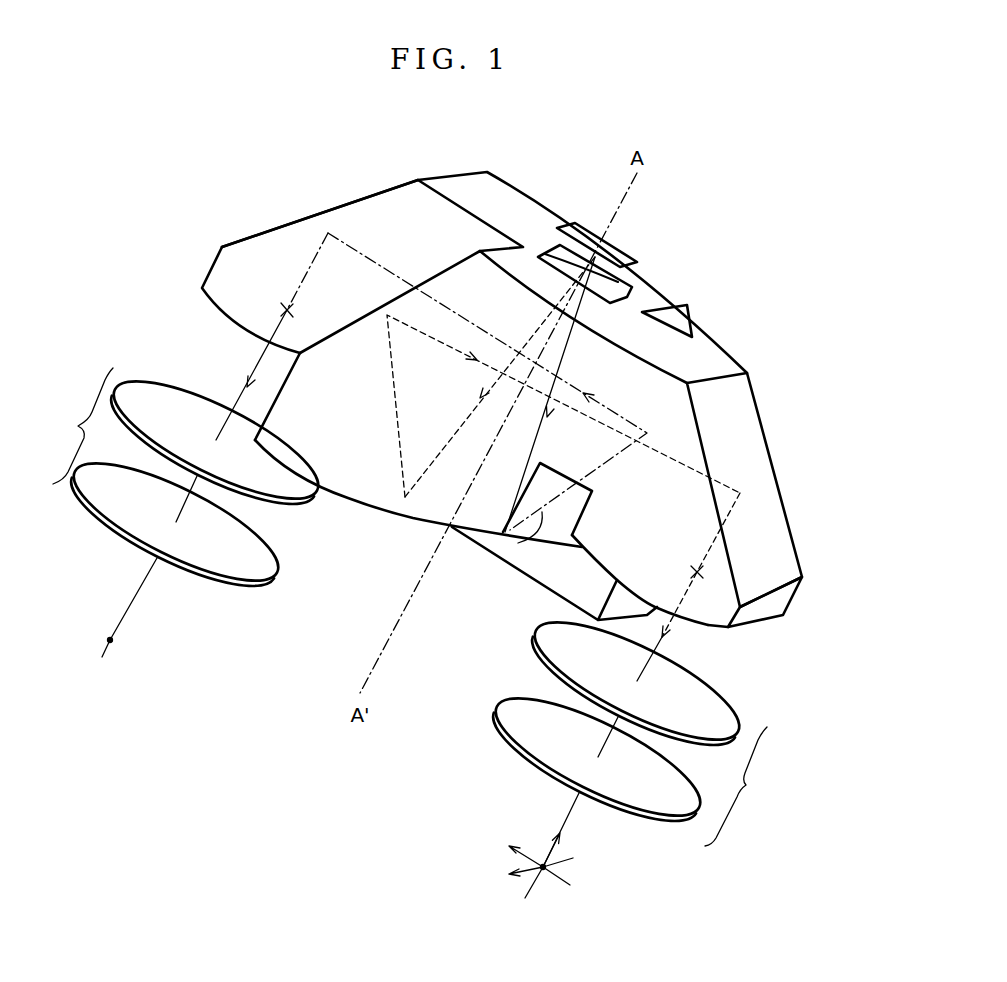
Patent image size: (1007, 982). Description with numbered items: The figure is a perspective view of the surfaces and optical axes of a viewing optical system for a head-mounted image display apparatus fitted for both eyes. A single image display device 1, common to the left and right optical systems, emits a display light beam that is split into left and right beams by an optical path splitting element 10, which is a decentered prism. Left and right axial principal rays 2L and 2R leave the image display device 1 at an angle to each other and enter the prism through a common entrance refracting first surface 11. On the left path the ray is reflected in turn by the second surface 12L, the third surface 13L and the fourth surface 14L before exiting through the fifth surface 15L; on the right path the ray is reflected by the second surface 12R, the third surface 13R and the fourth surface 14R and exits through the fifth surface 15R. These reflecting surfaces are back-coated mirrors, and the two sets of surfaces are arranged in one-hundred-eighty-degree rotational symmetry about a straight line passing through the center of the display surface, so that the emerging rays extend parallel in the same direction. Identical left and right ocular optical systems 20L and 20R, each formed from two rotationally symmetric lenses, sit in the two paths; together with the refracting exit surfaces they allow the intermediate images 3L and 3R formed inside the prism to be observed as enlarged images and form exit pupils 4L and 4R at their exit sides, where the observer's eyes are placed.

The image display device 1 is at (611, 252).
The optical path splitting element 10 is at (665, 297).
The first surface 11 is at (618, 282).
The second surface 12L is at (540, 583).
The second surface 12R is at (348, 497).
The third surface 13L is at (693, 325).
The third surface 13R is at (428, 278).
The fourth surface 14L is at (352, 205).
The fourth surface 14R is at (754, 452).
The fifth surface 15L is at (230, 318).
The fifth surface 15R is at (708, 626).
The left axial principal ray 2L is at (530, 543).
The right axial principal ray 2R is at (422, 480).
The intermediate image 3L is at (283, 300).
The intermediate image 3R is at (703, 572).
The exit pupil 4L is at (120, 640).
The exit pupil 4R is at (553, 868).
The left ocular optical system 20L is at (182, 475).
The right ocular optical system 20R is at (639, 734).